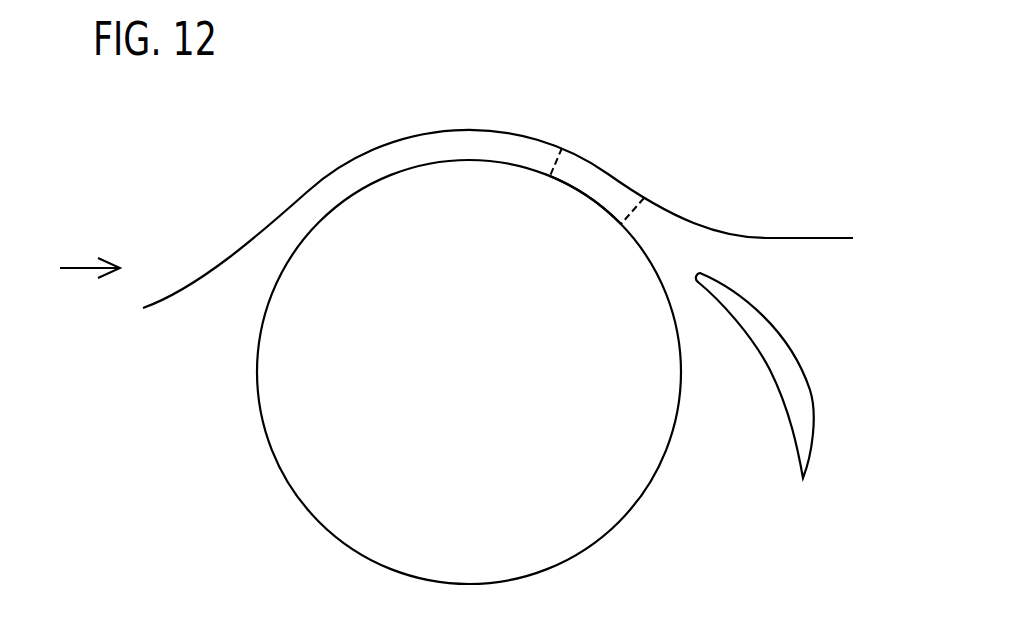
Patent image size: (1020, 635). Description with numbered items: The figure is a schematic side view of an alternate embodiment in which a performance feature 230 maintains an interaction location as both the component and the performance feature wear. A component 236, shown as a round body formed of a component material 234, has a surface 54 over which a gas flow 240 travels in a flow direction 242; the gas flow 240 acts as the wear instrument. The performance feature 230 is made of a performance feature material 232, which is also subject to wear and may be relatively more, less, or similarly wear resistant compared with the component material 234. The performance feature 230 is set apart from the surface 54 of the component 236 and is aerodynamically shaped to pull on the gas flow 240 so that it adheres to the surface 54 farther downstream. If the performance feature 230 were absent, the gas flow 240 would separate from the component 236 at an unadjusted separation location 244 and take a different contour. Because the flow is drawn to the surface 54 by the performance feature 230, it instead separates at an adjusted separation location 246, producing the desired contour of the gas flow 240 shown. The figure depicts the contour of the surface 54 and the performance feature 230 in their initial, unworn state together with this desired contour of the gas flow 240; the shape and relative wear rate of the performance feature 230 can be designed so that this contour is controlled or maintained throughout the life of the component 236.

The gas flow 240 is at (403, 138).
The component material 234 is at (469, 372).
The component 236 is at (516, 403).
The unadjusted separation location 244 is at (550, 172).
The adjusted separation location 246 is at (620, 225).
The surface 54 is at (588, 197).
The flow direction 242 is at (81, 268).
The performance feature 230 is at (800, 375).
The performance feature material 232 is at (783, 337).